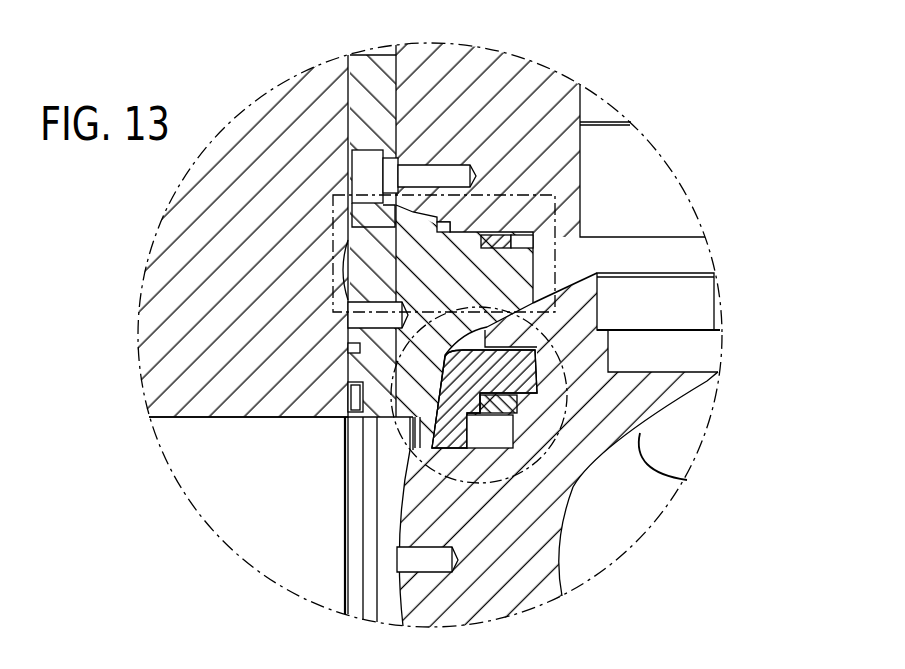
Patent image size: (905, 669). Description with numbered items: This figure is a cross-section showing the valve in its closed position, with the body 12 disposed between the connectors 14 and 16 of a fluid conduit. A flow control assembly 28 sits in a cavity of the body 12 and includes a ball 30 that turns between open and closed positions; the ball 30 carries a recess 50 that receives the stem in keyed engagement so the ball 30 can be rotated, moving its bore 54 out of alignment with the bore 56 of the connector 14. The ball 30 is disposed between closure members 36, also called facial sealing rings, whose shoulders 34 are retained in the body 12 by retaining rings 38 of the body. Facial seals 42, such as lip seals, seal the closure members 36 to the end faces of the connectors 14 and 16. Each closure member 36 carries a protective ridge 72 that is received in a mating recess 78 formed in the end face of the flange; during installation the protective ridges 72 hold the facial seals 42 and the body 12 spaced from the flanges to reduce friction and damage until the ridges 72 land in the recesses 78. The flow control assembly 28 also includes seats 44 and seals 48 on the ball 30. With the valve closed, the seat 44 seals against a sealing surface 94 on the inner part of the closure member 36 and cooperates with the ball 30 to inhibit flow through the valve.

The body 12 is at (478, 65).
The connector 14 is at (160, 250).
The connector 16 is at (333, 205).
The flow control assembly 28 is at (655, 264).
The ball 30 is at (705, 398).
The shoulder 34 is at (440, 217).
The closure member 36 is at (527, 266).
The retaining ring 38 is at (378, 55).
The facial seal 42 is at (347, 398).
The seat 44 is at (445, 447).
The seal 48 is at (520, 397).
The recess 50 is at (600, 316).
The bore 54 is at (687, 480).
The bore 56 is at (287, 418).
The protective ridge 72 is at (345, 287).
The mating recess 78 is at (343, 282).
The sealing surface 94 is at (408, 450).